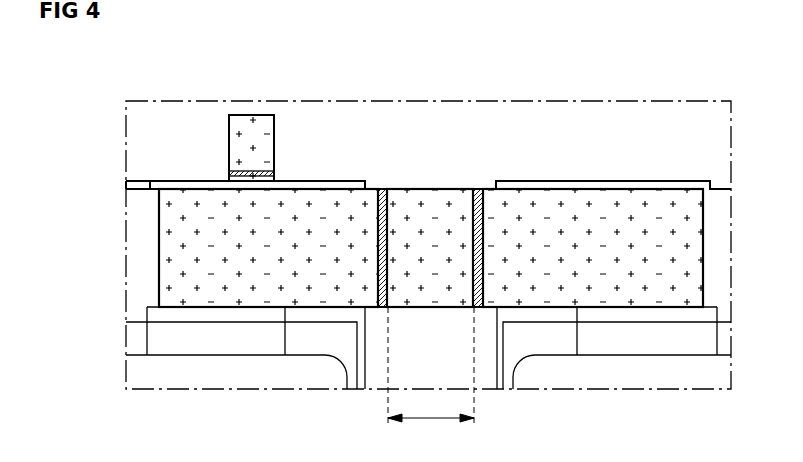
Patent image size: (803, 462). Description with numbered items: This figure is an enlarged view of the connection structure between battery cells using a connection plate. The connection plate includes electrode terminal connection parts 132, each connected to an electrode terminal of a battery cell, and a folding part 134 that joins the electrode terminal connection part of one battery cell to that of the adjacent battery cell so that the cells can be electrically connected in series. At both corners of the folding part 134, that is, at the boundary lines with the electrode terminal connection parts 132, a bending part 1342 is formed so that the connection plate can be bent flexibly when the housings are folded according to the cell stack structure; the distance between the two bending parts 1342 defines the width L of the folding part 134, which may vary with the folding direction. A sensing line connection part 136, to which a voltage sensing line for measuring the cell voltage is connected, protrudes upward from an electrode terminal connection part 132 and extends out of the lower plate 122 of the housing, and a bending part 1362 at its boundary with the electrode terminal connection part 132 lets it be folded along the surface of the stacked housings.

The lower plate 122 is at (137, 232).
The electrode terminal connection part 132 is at (300, 210).
The folding part 134 is at (431, 203).
The bending part 1342 is at (384, 200).
The sensing line connection part 136 is at (241, 130).
The bending part 1362 is at (230, 173).